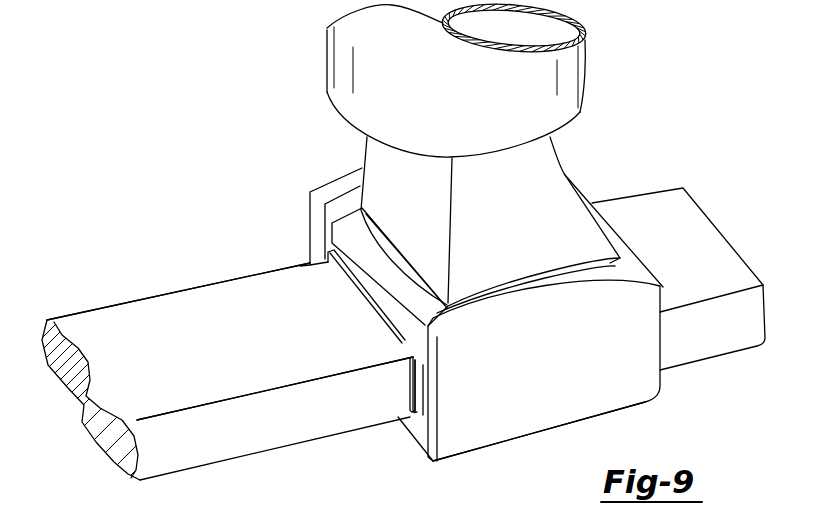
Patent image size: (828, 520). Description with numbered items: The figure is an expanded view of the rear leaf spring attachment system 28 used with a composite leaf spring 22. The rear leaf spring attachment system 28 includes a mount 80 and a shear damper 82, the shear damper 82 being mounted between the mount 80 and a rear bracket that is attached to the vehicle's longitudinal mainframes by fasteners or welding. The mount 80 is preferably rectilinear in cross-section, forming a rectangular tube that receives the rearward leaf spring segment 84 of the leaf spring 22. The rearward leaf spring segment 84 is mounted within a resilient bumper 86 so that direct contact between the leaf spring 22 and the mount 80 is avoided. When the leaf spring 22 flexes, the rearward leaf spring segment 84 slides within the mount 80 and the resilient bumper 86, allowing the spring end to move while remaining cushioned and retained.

The leaf spring 22 is at (198, 450).
The rear leaf spring attachment system 28 is at (555, 432).
The mount 80 is at (644, 379).
The shear damper 82 is at (570, 233).
The rearward leaf spring segment 84 is at (248, 356).
The resilient bumper 86 is at (413, 387).